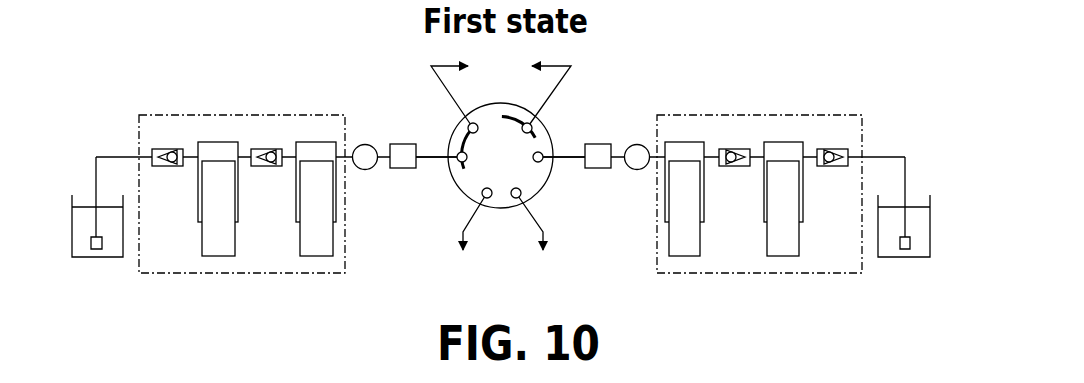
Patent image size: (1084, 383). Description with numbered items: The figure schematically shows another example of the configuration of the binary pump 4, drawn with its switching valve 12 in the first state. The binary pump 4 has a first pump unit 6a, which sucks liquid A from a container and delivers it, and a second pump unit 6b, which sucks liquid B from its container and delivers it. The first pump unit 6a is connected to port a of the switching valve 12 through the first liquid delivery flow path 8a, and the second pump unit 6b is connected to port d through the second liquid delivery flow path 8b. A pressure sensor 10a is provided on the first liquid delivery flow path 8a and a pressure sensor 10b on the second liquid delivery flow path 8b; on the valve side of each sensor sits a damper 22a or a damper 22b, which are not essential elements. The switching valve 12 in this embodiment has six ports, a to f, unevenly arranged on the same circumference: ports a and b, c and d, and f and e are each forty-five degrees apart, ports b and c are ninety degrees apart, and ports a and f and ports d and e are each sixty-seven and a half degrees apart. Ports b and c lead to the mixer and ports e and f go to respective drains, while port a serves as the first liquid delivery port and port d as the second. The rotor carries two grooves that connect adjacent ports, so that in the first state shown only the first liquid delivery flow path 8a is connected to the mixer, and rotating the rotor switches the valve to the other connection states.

The binary pump 4 is at (723, 62).
The first pump unit 6a is at (253, 115).
The second pump unit 6b is at (768, 115).
The pressure sensor 10a is at (368, 145).
The pressure sensor 10b is at (633, 145).
The damper 22a is at (410, 144).
The damper 22b is at (600, 144).
The first liquid delivery flow path 8a is at (429, 160).
The second liquid delivery flow path 8b is at (570, 160).
The switching valve 12 is at (495, 209).